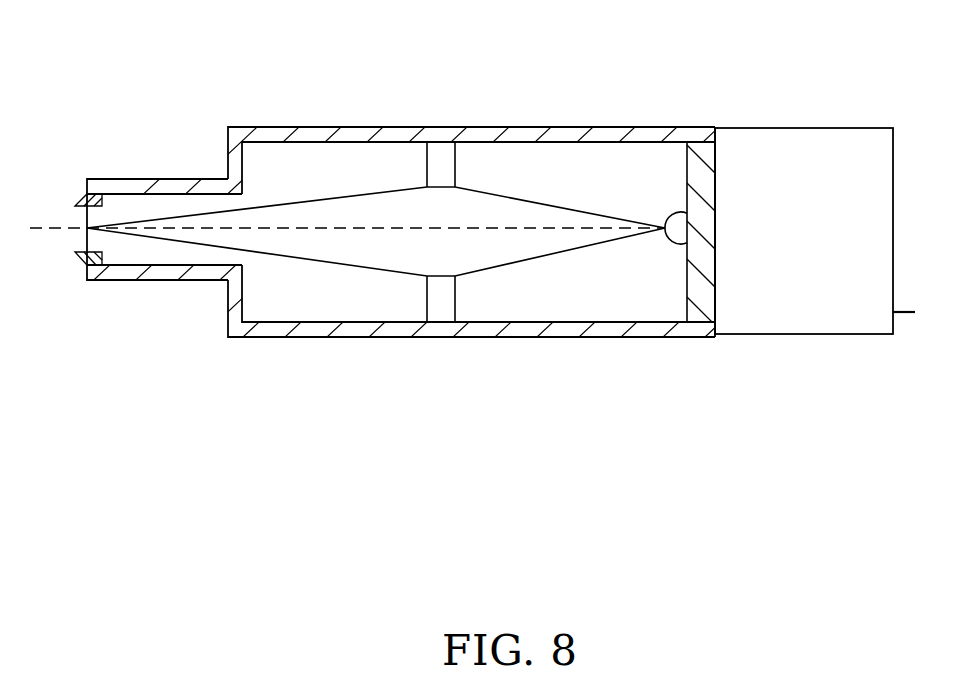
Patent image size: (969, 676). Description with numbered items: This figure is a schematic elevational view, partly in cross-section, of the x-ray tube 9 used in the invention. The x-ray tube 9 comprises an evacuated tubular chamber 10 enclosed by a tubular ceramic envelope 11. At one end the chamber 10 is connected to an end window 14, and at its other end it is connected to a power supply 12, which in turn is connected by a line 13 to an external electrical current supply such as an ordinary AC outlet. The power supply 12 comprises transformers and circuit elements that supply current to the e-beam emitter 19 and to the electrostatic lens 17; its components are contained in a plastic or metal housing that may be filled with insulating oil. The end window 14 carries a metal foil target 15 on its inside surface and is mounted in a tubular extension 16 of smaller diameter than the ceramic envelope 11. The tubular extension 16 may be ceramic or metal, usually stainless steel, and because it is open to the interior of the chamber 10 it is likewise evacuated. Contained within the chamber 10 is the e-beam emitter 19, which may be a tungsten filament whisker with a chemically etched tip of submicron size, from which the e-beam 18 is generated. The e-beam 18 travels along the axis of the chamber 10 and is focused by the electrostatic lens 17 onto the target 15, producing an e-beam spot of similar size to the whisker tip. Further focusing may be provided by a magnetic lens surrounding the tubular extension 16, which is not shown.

The x-ray tube 9 is at (526, 83).
The evacuated tubular chamber 10 is at (527, 305).
The tubular ceramic envelope 11 is at (328, 127).
The power supply 12 is at (768, 133).
The line 13 is at (912, 314).
The end window 14 is at (78, 206).
The metal foil target 15 is at (88, 242).
The tubular extension 16 is at (137, 179).
The electrostatic lens 17 is at (440, 306).
The e-beam 18 is at (500, 202).
The e-beam emitter 19 is at (677, 247).